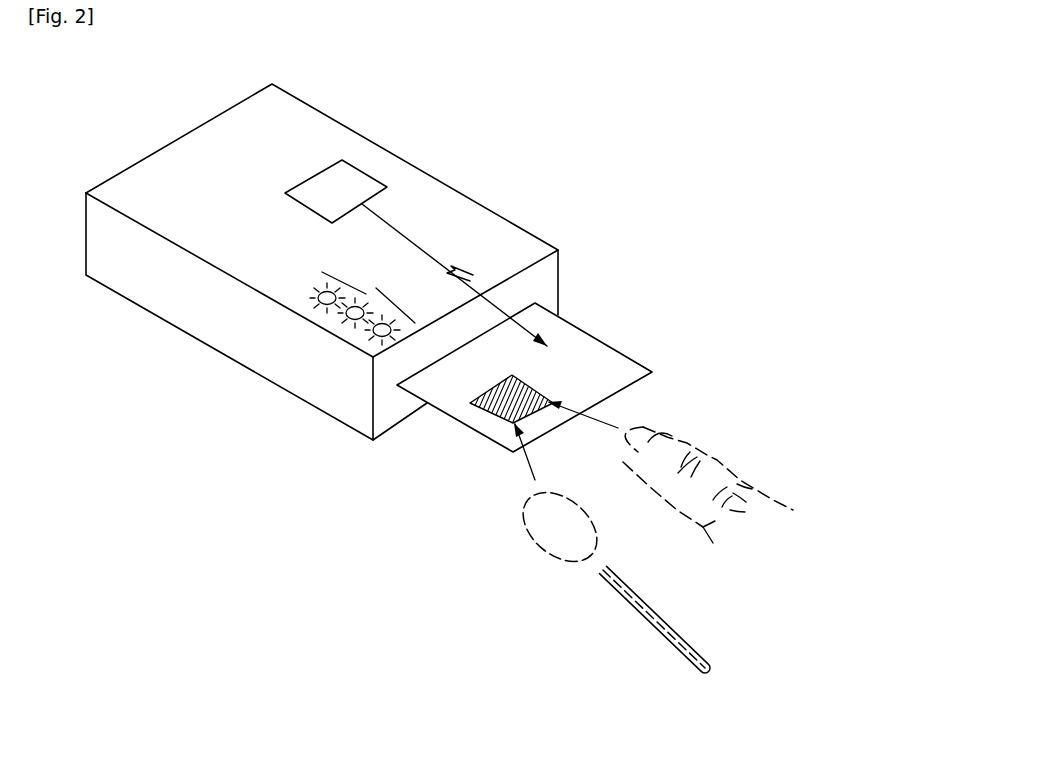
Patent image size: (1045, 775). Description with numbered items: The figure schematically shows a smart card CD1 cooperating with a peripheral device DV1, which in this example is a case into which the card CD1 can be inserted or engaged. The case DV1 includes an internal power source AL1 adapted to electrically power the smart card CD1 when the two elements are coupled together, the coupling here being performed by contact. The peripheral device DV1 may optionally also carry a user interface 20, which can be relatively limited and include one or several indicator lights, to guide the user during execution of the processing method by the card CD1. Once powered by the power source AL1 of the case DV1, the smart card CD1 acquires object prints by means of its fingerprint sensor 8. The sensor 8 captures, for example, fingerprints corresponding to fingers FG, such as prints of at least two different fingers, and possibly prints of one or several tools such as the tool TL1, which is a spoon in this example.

The peripheral device DV1 is at (421, 168).
The internal power source AL1 is at (336, 191).
The user interface 20 is at (367, 295).
The smart card CD1 is at (587, 351).
The fingerprint sensor 8 is at (468, 428).
The fingers FG is at (746, 471).
The tool TL1 is at (615, 591).